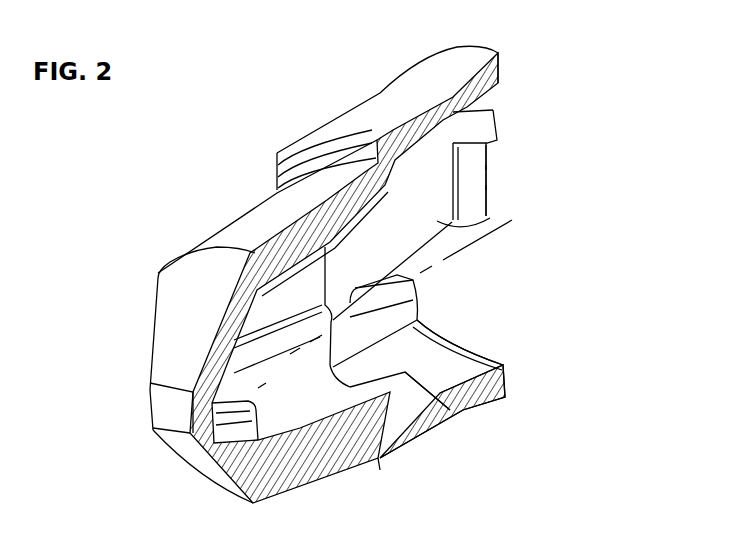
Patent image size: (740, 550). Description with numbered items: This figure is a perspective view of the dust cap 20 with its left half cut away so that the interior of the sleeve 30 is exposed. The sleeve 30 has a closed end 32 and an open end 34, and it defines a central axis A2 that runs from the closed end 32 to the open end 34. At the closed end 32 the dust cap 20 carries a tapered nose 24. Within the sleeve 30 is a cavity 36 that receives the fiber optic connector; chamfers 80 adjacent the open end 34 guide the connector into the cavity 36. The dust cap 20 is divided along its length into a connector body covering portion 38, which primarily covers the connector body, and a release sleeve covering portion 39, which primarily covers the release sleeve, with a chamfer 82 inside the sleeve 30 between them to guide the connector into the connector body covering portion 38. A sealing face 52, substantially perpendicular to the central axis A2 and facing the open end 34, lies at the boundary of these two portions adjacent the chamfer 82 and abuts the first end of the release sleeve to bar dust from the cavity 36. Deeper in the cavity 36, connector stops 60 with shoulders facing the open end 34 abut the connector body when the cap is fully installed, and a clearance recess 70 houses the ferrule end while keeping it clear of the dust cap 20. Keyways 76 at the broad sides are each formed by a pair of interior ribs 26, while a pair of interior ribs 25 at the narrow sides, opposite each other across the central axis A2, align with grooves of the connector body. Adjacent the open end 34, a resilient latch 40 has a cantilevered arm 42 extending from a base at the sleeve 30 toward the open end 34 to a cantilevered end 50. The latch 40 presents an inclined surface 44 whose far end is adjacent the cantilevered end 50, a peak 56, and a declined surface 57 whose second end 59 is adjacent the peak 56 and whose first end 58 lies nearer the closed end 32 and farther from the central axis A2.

The dust cap 20 is at (585, 161).
The tapered nose 24 is at (173, 457).
The interior ribs 25 is at (408, 385).
The interior ribs 26 is at (257, 380).
The sleeve 30 is at (280, 210).
The closed end 32 is at (182, 337).
The open end 34 is at (468, 337).
The cavity 36 is at (315, 400).
The connector body covering portion 38 is at (237, 230).
The release sleeve covering portion 39 is at (412, 70).
The resilient latch 40 is at (493, 168).
The cantilevered arm 42 is at (490, 218).
The inclined surface 44 is at (499, 134).
The cantilevered end 50 is at (495, 118).
The sealing face 52 is at (413, 408).
The peak 56 is at (492, 191).
The declined surface 57 is at (472, 157).
The first end 58 is at (452, 177).
The second end 59 is at (489, 154).
The connector stop 60 is at (250, 433).
The clearance recess 70 is at (215, 437).
The keyway 76 is at (247, 340).
The chamfer 80 is at (433, 327).
The chamfer 82 is at (380, 460).
The central axis A2 is at (477, 242).